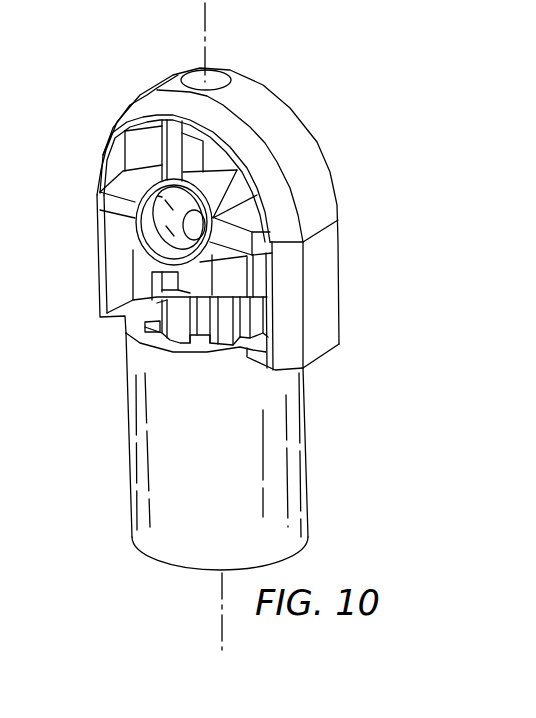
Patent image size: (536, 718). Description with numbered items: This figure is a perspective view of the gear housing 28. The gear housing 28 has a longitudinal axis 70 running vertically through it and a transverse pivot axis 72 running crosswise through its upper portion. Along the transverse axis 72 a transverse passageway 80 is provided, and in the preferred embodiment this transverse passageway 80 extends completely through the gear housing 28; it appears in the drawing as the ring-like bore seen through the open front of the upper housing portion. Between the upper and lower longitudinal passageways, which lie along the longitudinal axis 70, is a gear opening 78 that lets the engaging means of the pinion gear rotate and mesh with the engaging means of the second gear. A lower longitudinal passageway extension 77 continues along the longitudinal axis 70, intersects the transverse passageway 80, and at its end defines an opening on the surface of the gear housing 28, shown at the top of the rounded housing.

The longitudinal axis 70 is at (203, 22).
The lower longitudinal passageway extension 77 is at (217, 80).
The transverse pivot axis 72 is at (318, 133).
The transverse passageway 80 is at (135, 251).
The gear opening 78 is at (173, 280).
The gear housing 28 is at (308, 452).